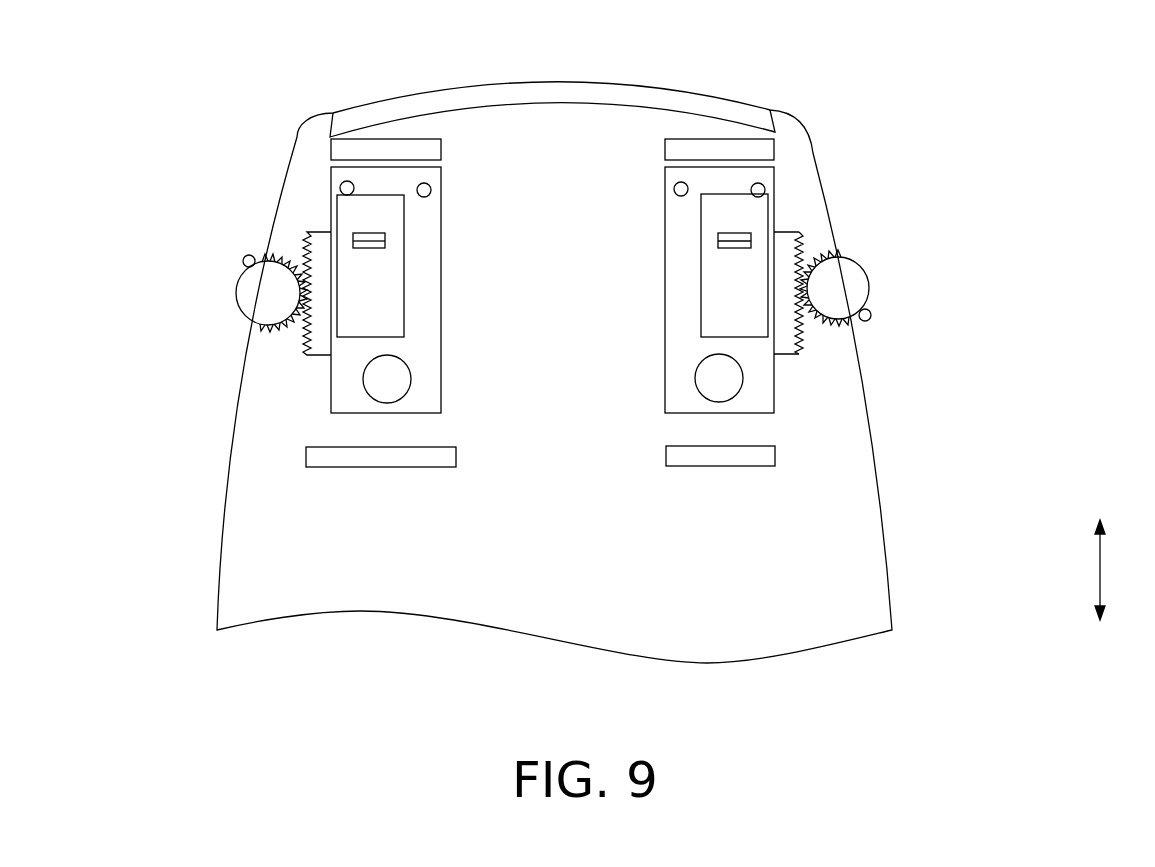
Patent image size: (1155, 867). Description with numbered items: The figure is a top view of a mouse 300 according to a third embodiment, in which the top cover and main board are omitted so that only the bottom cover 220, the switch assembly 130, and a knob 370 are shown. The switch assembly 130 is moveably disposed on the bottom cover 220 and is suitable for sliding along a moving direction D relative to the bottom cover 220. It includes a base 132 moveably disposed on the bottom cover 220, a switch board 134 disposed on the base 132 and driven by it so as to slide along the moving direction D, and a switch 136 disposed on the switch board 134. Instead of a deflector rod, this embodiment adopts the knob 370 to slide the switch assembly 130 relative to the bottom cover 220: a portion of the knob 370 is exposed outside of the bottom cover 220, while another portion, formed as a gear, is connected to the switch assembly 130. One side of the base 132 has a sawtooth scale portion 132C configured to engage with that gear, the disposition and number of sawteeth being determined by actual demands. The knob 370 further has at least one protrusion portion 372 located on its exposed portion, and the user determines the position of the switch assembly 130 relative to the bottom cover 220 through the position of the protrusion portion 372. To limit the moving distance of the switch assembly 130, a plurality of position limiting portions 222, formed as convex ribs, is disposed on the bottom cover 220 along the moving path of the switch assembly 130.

The switch assembly 130 is at (653, 218).
The base 132 is at (890, 281).
The sawtooth scale portion 132C is at (800, 352).
The switch board 134 is at (767, 175).
The switch 136 is at (757, 213).
The bottom cover 220 is at (857, 607).
The position limiting portions 222 is at (767, 456).
The mouse 300 is at (643, 367).
The knob 370 is at (853, 280).
The protrusion portion 372 is at (871, 315).
The moving direction D is at (1099, 549).